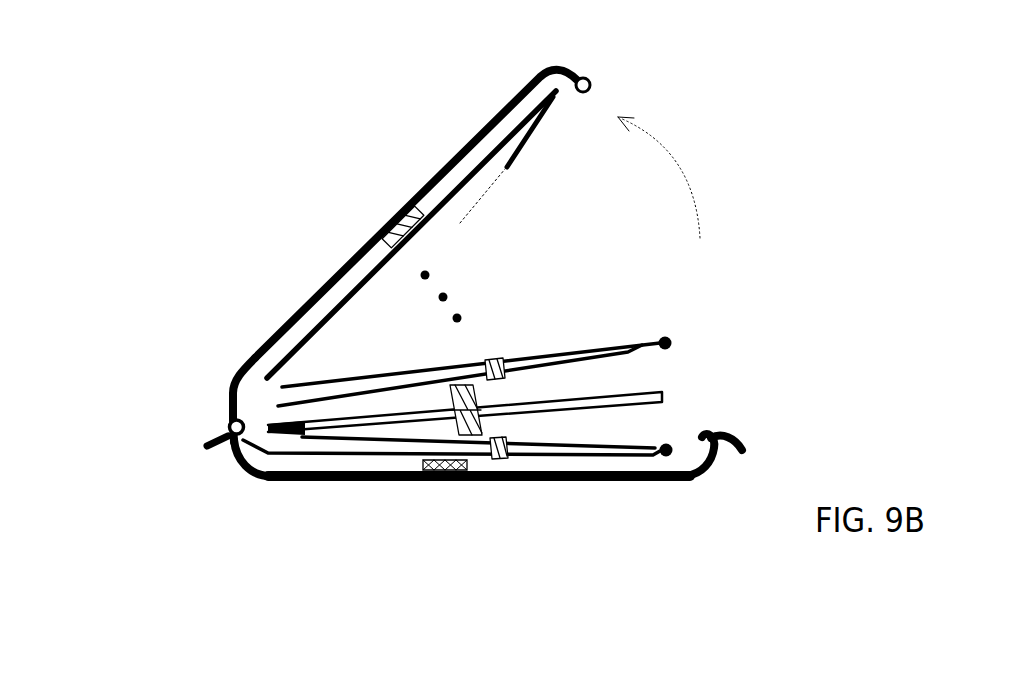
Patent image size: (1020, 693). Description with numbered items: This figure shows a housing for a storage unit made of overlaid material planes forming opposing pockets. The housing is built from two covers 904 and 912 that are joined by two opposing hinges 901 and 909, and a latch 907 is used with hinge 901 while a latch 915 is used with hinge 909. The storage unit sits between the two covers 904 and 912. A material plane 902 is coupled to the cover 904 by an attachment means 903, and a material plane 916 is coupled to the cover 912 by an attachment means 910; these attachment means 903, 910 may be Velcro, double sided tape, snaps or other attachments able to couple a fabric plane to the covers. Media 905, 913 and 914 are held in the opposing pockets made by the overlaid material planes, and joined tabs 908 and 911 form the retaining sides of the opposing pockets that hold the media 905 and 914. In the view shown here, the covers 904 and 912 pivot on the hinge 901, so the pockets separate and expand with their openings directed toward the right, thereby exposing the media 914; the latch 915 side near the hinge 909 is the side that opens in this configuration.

The hinge 901 is at (228, 423).
The material plane 902 is at (338, 283).
The attachment means 903 is at (398, 213).
The cover 904 is at (495, 118).
The media 905 is at (250, 358).
The latch 907 is at (203, 445).
The joined tab 908 is at (491, 356).
The hinge 909 is at (592, 79).
The attachment means 910 is at (432, 481).
The joined tab 911 is at (490, 482).
The cover 912 is at (620, 481).
The media 913 is at (242, 450).
The media 914 is at (665, 400).
The latch 915 is at (740, 440).
The material plane 916 is at (304, 481).